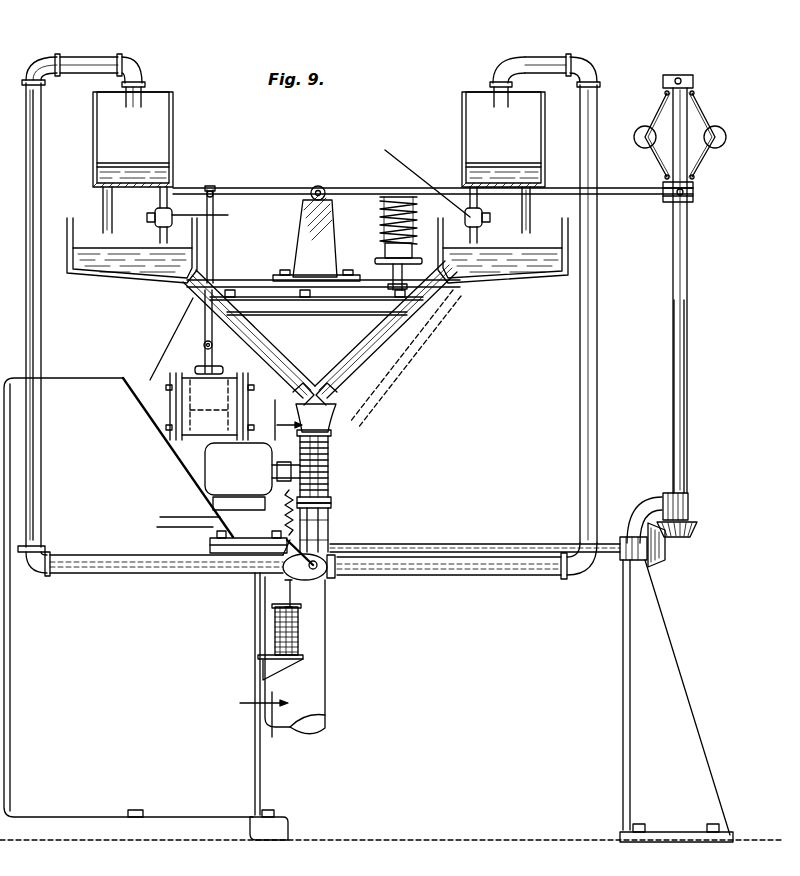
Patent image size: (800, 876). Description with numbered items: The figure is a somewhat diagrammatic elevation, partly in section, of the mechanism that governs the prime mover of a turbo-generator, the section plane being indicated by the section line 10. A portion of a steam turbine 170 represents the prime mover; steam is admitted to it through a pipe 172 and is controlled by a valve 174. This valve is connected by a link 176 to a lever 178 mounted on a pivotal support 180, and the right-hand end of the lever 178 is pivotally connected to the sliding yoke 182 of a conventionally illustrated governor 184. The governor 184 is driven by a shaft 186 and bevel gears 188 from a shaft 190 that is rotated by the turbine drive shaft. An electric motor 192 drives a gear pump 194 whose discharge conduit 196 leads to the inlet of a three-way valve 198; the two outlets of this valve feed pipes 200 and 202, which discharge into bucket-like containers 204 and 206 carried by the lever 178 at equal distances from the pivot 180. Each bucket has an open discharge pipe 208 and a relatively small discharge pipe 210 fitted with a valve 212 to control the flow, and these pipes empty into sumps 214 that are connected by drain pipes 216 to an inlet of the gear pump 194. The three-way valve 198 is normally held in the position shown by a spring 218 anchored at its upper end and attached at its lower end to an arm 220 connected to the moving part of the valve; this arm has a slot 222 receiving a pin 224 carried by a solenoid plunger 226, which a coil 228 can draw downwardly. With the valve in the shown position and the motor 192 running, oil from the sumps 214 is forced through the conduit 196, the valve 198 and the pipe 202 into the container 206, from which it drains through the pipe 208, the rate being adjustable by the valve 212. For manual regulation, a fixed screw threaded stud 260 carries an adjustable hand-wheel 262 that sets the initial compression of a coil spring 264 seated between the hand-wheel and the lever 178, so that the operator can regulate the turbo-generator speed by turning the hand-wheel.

The section line 10 is at (275, 568).
The steam turbine 170 is at (233, 783).
The pipe 172 is at (277, 382).
The valve 174 is at (175, 420).
The link 176 is at (214, 250).
The lever 178 is at (266, 187).
The pivotal support 180 is at (323, 191).
The sliding yoke 182 is at (694, 192).
The governor 184 is at (687, 118).
The shaft 186 is at (685, 449).
The bevel gears 188 is at (690, 540).
The shaft 190 is at (421, 545).
The electric motor 192 is at (225, 470).
The gear pump 194 is at (329, 456).
The discharge conduit 196 is at (330, 506).
The three-way valve 198 is at (327, 578).
The pipe 200 is at (133, 572).
The pipe 202 is at (522, 577).
The bucket-like container 204 is at (173, 150).
The bucket-like container 206 is at (462, 128).
The open discharge pipe 208 is at (103, 210).
The discharge pipe 210 is at (167, 200).
The valve 212 is at (321, 175).
The sump 214 is at (130, 280).
The drain pipe 216 is at (353, 378).
The spring 218 is at (331, 528).
The arm 220 is at (300, 540).
The slot 222 is at (303, 580).
The pin 224 is at (290, 553).
The solenoid plunger 226 is at (290, 600).
The coil 228 is at (283, 640).
The screw threaded stud 260 is at (395, 288).
The hand-wheel 262 is at (392, 260).
The coil spring 264 is at (386, 230).